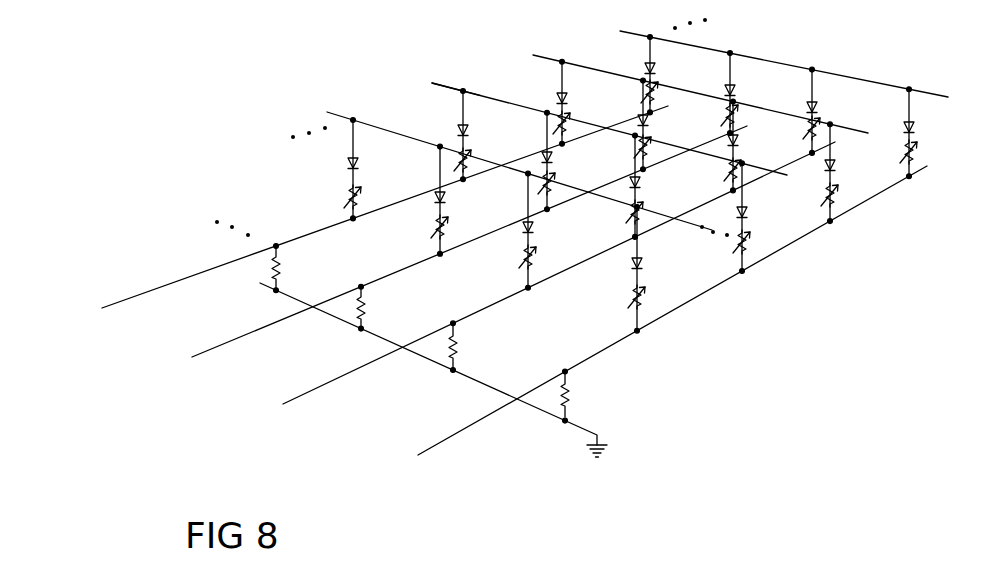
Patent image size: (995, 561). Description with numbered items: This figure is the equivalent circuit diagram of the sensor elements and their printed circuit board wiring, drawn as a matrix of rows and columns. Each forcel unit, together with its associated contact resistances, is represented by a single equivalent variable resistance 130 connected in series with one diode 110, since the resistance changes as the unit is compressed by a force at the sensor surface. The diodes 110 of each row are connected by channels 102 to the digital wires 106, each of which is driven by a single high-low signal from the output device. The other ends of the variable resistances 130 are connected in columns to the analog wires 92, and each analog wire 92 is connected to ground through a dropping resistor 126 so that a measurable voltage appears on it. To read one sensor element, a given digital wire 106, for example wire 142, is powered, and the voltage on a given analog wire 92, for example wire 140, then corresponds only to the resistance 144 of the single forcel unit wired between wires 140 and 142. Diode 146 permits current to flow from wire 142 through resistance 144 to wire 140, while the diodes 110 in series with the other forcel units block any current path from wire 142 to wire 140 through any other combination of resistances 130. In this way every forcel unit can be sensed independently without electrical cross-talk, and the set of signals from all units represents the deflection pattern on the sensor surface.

The analog wire 92 is at (173, 286).
The channel 102 is at (526, 174).
The digital wire 106 is at (347, 114).
The diode 110 is at (470, 124).
The dropping resistor 126 is at (282, 265).
The variable resistance 130 is at (745, 250).
The wire 140 is at (362, 369).
The wire 142 is at (443, 85).
The resistance 144 is at (631, 211).
The diode 146 is at (642, 182).